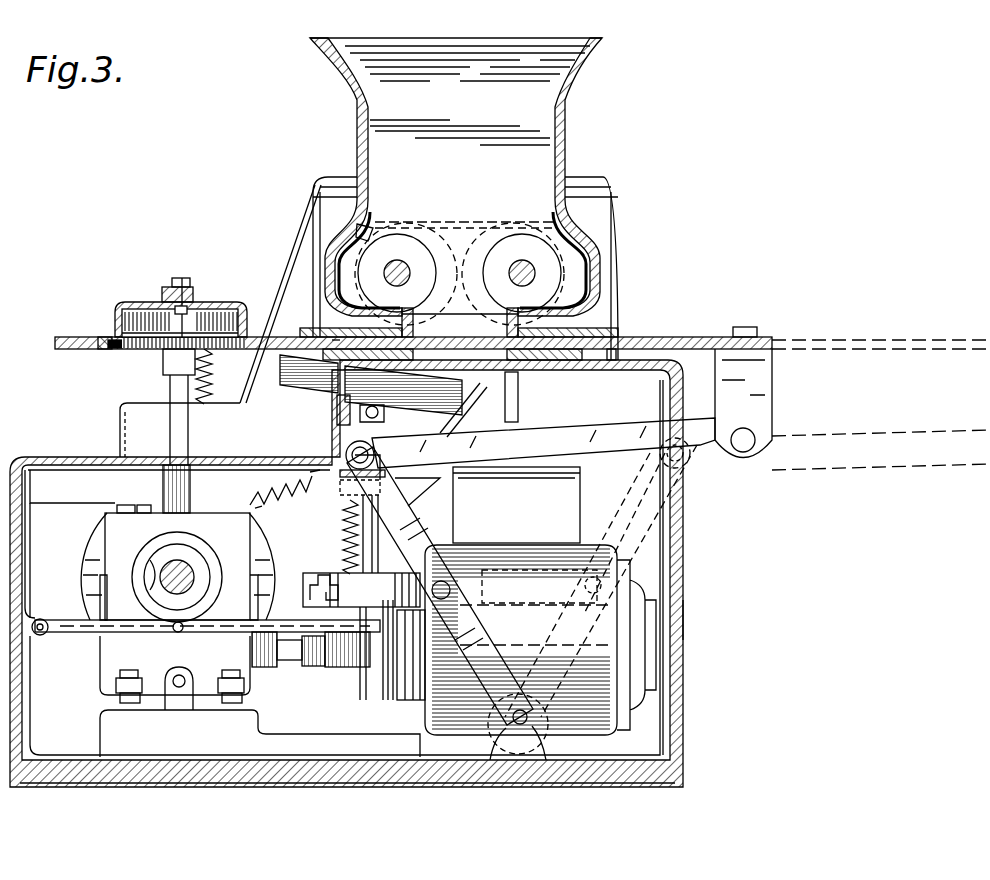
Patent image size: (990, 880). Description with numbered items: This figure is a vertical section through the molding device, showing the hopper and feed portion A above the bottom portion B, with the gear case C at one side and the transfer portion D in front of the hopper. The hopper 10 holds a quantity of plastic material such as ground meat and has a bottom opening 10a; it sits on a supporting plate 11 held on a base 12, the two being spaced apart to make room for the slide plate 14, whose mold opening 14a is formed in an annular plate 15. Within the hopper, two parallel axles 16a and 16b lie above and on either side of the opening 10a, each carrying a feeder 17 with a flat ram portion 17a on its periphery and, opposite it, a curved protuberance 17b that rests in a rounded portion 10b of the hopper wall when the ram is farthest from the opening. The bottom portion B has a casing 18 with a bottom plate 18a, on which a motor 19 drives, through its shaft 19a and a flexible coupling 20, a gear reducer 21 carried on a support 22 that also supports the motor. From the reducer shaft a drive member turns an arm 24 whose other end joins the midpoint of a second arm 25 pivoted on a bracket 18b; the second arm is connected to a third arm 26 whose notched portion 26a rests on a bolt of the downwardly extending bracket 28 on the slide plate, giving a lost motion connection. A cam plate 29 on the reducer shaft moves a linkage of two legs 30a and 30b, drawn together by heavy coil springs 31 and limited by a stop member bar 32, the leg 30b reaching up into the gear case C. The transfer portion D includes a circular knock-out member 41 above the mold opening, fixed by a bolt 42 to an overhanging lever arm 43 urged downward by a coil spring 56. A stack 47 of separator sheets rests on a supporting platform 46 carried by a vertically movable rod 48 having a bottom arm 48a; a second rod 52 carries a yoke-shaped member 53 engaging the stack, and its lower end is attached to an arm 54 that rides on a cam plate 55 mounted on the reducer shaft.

The hopper 10 is at (578, 88).
The hopper and feed portion A is at (565, 150).
The gear case C is at (618, 250).
The rounded portion 10b is at (338, 205).
The ram portion 17a is at (372, 262).
The feeder 17 is at (423, 258).
The axle 16a is at (399, 266).
The axle 16b is at (520, 264).
The protuberance 17b is at (345, 266).
The bottom opening 10a is at (414, 327).
The supporting plate 11 is at (313, 335).
The slide plate 14 is at (75, 336).
The mold opening 14a is at (118, 350).
The annular plate 15 is at (105, 336).
The transfer portion D is at (130, 302).
The knock-out member 41 is at (245, 312).
The bolt 42 is at (183, 278).
The overhanging lever arm 43 is at (163, 365).
The coil spring 56 is at (210, 388).
The casing 18 is at (683, 573).
The bottom portion B is at (686, 630).
The bottom plate 18a is at (683, 774).
The base 12 is at (590, 352).
The stack 47 is at (285, 375).
The supporting platform 46 is at (325, 395).
The yoke-shaped member 53 is at (385, 412).
The leg 30b is at (518, 392).
The stop member bar 32 is at (478, 430).
The third arm 26 is at (615, 436).
The notched portion 26a is at (700, 450).
The bracket 28 is at (760, 404).
The second arm 25 is at (470, 612).
The bracket 18b is at (511, 717).
The leg 30a is at (425, 483).
The motor 19 is at (575, 556).
The cam plate 29 is at (100, 540).
The cam plate 55 is at (160, 553).
The arm 54 is at (82, 634).
The gear reducer 21 is at (130, 666).
The support 22 is at (276, 740).
The flexible coupling 20 is at (330, 668).
The shaft 19a is at (395, 665).
The coil springs 31 is at (256, 482).
The rod 48 is at (342, 532).
The arm 24 is at (338, 568).
The arm 48a is at (312, 590).
The second rod 52 is at (386, 547).